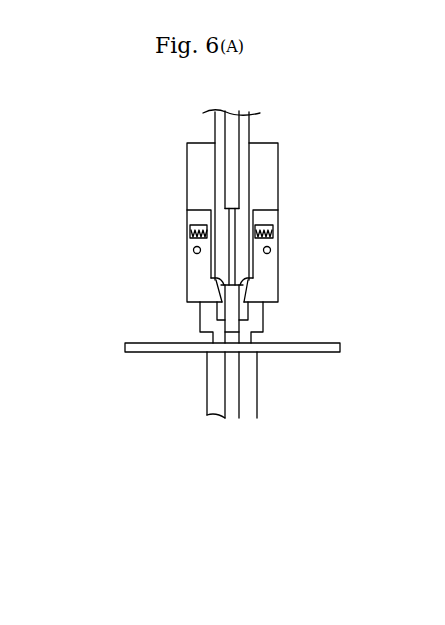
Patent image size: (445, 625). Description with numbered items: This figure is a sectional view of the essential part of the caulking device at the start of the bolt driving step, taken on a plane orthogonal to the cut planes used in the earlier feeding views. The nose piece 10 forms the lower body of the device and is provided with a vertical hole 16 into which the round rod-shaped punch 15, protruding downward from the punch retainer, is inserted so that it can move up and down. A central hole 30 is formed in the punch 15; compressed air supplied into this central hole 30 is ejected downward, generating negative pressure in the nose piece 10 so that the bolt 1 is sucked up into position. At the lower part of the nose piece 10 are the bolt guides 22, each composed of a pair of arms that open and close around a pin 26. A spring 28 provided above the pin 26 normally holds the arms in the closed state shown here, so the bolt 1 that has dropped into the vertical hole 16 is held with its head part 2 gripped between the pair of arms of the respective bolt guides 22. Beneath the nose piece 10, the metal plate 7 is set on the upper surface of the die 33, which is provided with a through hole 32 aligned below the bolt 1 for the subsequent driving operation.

The bolt 1 is at (231, 310).
The head part 2 is at (224, 283).
The metal plate 7 is at (340, 348).
The nose piece 10 is at (187, 193).
The punch 15 is at (215, 127).
The vertical hole 16 is at (249, 184).
The bolt guide 22 is at (187, 252).
The pin 26 is at (270, 250).
The spring 28 is at (277, 233).
The central hole 30 is at (238, 164).
The through hole 32 is at (226, 375).
The die 33 is at (257, 390).